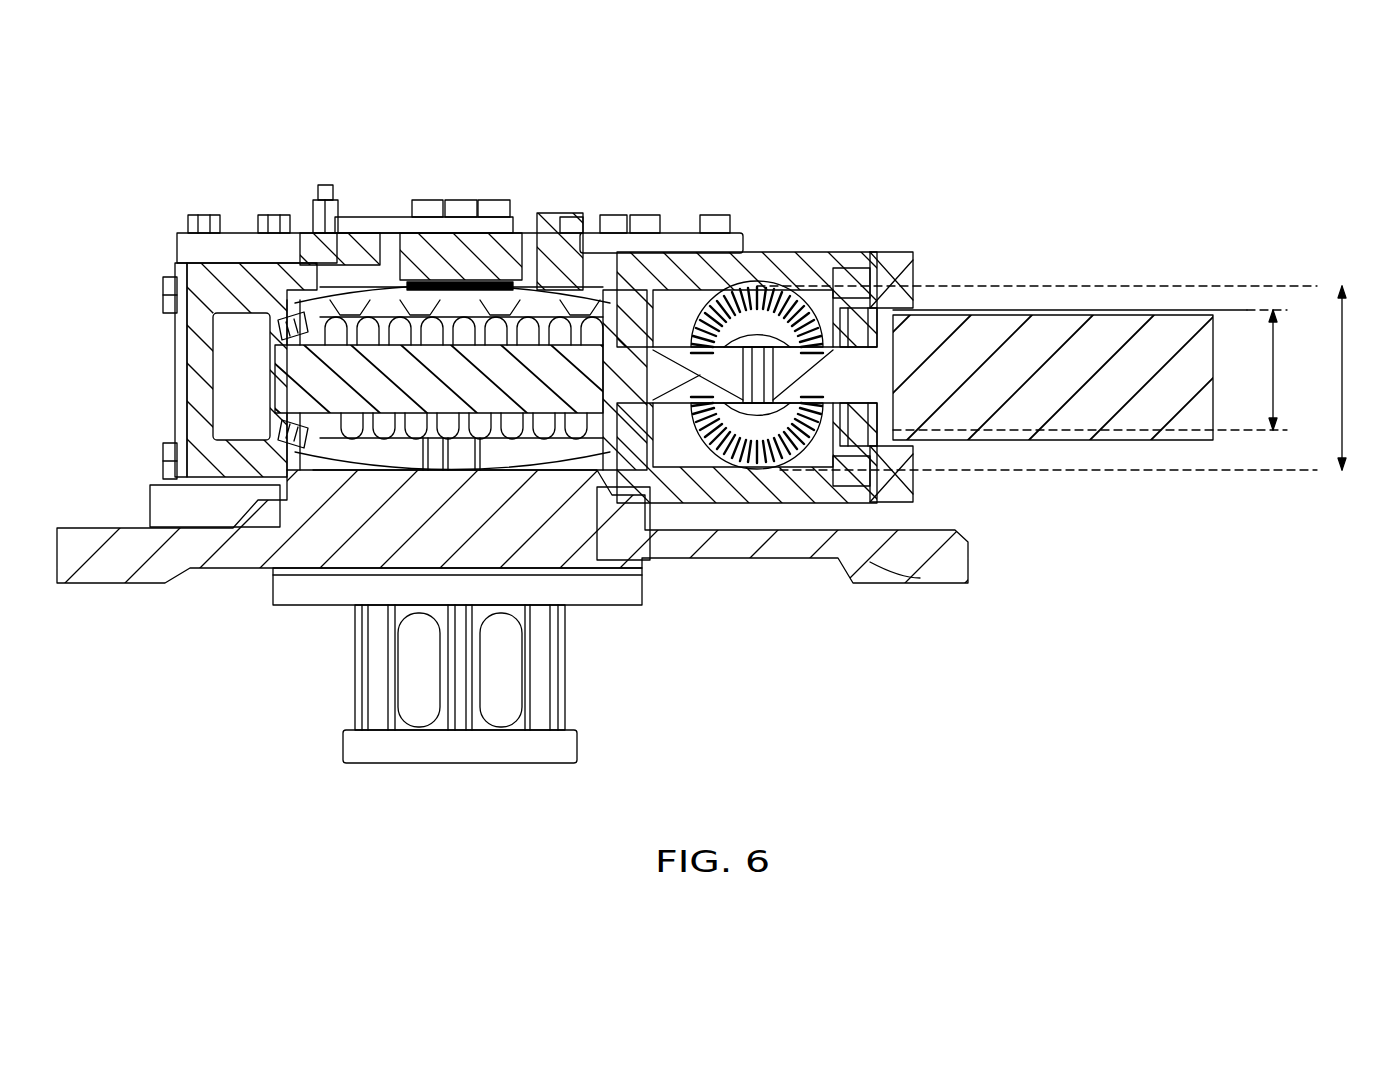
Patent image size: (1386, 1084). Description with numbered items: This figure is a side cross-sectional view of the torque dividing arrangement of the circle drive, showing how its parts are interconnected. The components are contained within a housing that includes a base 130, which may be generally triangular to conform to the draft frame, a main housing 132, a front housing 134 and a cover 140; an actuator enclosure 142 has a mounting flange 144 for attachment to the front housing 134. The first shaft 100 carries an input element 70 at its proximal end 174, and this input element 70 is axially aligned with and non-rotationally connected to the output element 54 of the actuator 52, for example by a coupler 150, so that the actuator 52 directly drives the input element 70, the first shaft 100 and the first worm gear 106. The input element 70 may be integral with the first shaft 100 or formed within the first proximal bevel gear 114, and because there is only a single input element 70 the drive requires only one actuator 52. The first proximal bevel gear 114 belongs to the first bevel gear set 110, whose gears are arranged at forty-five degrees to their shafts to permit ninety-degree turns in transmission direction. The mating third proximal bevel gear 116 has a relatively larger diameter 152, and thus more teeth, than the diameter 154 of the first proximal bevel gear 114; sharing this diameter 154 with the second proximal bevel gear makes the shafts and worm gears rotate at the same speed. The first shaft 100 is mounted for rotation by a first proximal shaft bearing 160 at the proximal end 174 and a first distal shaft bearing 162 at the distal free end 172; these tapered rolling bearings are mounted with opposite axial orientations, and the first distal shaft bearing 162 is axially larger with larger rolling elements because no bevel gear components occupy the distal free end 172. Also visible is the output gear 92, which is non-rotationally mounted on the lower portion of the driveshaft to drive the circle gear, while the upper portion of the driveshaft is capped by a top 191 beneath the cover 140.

The actuator 52 is at (1112, 313).
The output element 54 is at (810, 373).
The input element 70 is at (692, 270).
The output gear 92 is at (351, 672).
The first shaft 100 is at (400, 363).
The first worm gear 106 is at (423, 470).
The first bevel gear set 110 is at (743, 433).
The first proximal bevel gear 114 is at (660, 433).
The third proximal bevel gear 116 is at (745, 470).
The base 130 is at (127, 585).
The main housing 132 is at (257, 250).
The front housing 134 is at (850, 253).
The cover 140 is at (443, 253).
The actuator enclosure 142 is at (1000, 310).
The mounting flange 144 is at (885, 263).
The coupler 150 is at (765, 360).
The diameter 152 is at (1341, 378).
The diameter 154 is at (1273, 370).
The first proximal shaft bearing 160 is at (645, 475).
The first distal shaft bearing 162 is at (290, 298).
The distal free end 172 is at (300, 362).
The proximal end 174 is at (590, 370).
The top 191 is at (385, 305).